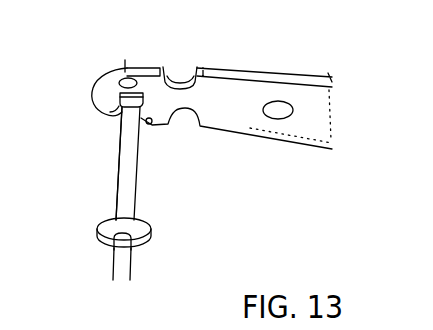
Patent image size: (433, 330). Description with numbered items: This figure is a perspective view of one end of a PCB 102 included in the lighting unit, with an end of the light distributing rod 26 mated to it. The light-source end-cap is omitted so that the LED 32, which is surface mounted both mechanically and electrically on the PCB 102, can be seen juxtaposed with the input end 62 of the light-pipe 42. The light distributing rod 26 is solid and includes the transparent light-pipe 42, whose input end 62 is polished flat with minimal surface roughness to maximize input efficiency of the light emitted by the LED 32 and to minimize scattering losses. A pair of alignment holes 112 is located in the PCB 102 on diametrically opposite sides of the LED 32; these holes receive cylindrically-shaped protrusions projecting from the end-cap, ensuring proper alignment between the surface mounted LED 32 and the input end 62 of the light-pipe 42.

The PCB 102 is at (278, 148).
The alignment holes 112 is at (126, 68).
The LED 32 is at (108, 100).
The input end 62 is at (123, 109).
The light distributing rod 26 is at (142, 188).
The light-pipe 42 is at (106, 191).